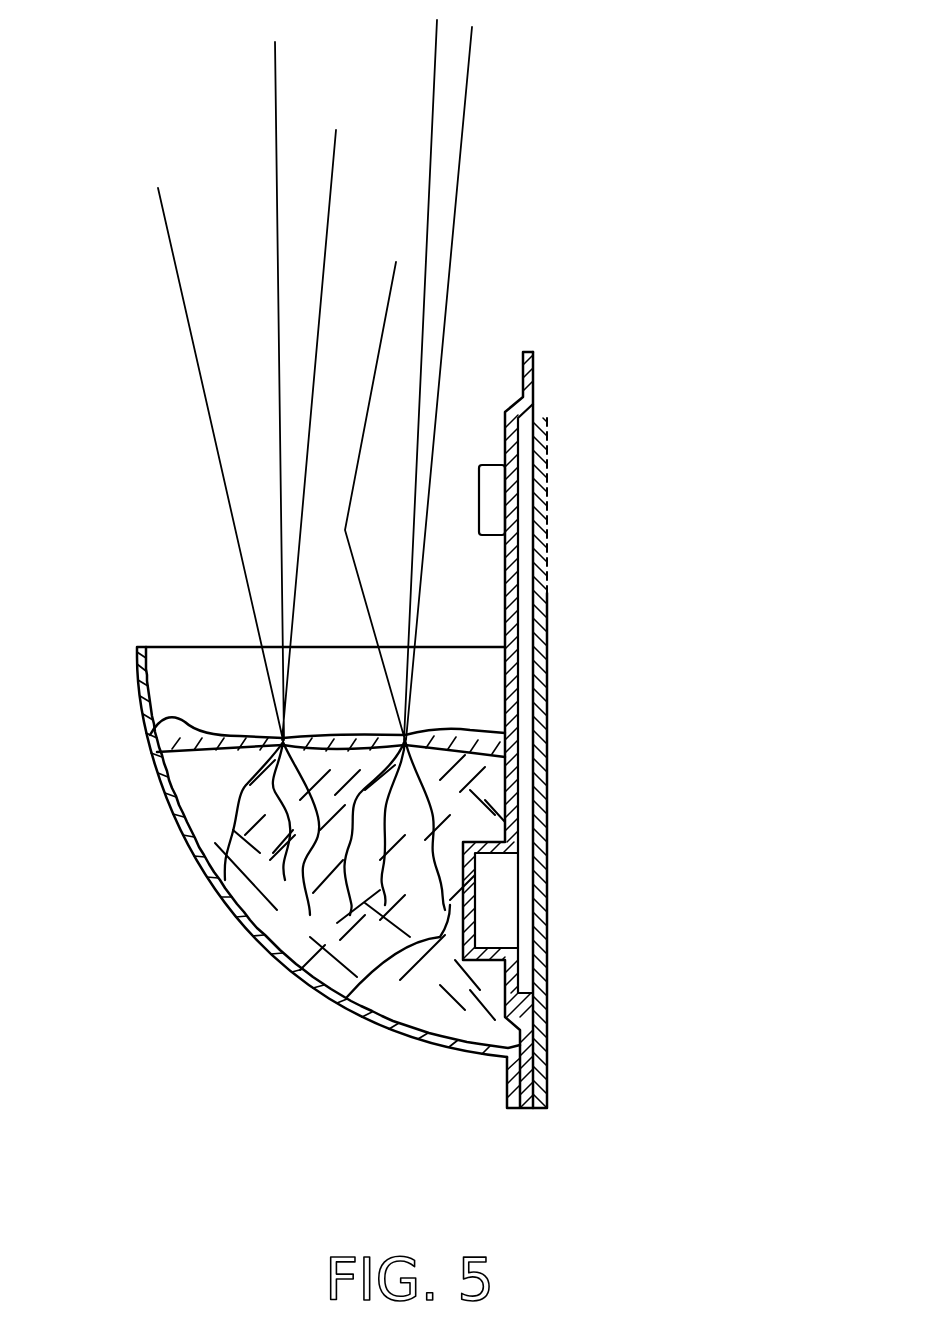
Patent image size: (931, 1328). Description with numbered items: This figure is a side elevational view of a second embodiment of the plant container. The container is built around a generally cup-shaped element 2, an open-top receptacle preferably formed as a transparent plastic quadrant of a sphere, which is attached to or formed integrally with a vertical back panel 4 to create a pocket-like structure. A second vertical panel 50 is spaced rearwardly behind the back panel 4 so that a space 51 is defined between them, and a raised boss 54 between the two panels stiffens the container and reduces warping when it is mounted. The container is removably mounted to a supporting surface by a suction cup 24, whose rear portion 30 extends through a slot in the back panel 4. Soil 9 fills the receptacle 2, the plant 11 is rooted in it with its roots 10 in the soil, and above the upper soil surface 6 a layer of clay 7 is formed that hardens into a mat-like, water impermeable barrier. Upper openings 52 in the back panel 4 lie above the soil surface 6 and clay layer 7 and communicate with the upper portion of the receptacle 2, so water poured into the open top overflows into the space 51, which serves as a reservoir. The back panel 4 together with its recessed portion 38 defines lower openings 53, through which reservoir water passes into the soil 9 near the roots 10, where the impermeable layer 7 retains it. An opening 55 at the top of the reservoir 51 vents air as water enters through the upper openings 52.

The cup-shaped element 2 is at (193, 867).
The vertical back panel 4 is at (546, 418).
The upper soil surface 6 is at (172, 787).
The layer of clay 7 is at (152, 721).
The soil 9 is at (280, 907).
The roots 10 is at (345, 997).
The plant 11 is at (230, 510).
The suction cup 24 is at (517, 465).
The rear portion 30 is at (479, 502).
The recessed portion 38 is at (477, 918).
The second vertical panel 50 is at (547, 818).
The space 51 is at (530, 553).
The upper openings 52 is at (518, 712).
The lower openings 53 is at (477, 868).
The raised boss 54 is at (532, 748).
The opening 55 is at (547, 588).